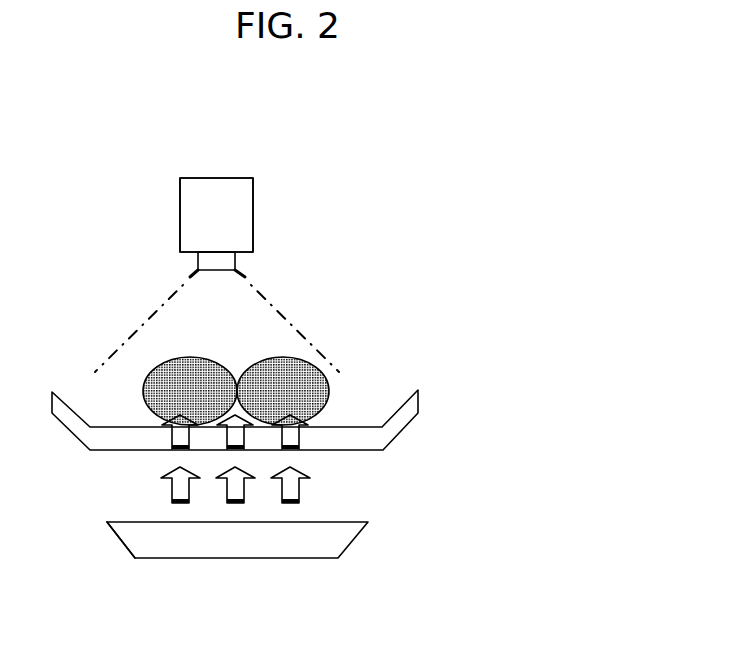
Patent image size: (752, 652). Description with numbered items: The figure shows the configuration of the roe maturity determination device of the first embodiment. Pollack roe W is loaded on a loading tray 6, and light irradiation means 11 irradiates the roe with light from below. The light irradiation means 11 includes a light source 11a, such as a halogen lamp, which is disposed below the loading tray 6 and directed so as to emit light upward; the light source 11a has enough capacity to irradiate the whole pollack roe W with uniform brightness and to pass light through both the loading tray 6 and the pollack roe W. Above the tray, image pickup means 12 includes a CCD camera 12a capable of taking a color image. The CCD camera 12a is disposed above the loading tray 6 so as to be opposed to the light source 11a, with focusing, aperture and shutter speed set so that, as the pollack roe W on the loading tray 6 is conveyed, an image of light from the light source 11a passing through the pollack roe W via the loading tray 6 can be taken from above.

The image pickup means 12 is at (180, 178).
The CCD camera 12a is at (185, 212).
The pollack roe W is at (146, 398).
The loading tray 6 is at (403, 427).
The light irradiation means 11 is at (362, 525).
The light source 11a is at (128, 548).